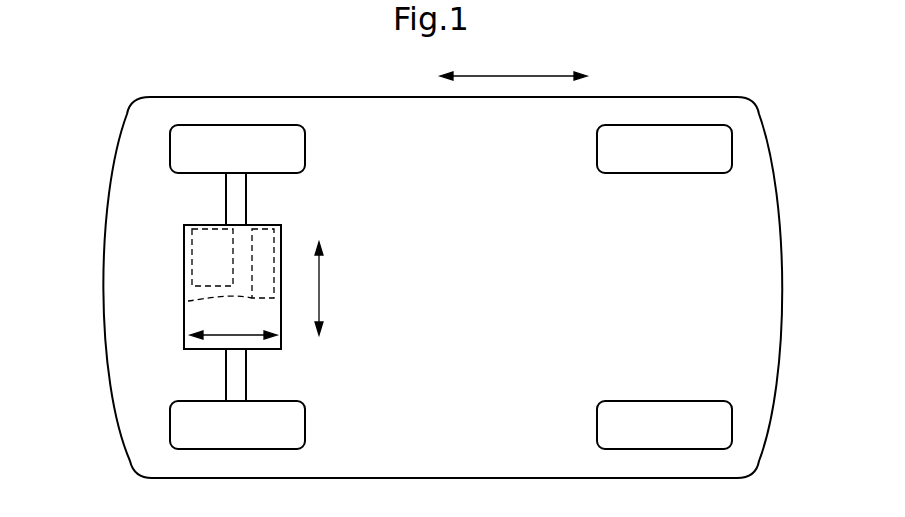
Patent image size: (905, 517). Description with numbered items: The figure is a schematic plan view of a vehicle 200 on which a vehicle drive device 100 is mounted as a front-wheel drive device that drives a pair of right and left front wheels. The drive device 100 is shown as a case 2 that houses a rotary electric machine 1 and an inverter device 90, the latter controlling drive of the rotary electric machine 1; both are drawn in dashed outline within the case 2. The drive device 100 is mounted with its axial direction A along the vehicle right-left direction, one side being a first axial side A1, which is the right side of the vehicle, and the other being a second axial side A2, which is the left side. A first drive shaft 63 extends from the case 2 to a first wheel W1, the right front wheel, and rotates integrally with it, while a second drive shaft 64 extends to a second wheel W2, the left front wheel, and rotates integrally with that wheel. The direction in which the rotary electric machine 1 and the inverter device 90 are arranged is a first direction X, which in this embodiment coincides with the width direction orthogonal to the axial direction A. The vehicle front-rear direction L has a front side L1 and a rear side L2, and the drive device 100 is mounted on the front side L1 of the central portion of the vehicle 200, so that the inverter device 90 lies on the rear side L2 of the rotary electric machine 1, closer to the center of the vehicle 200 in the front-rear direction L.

The vehicle 200 is at (717, 97).
The vehicle drive device 100 is at (182, 281).
The rotary electric machine 1 is at (192, 247).
The case 2 is at (199, 298).
The inverter device 90 is at (188, 301).
The first drive shaft 63 is at (243, 194).
The second drive shaft 64 is at (244, 383).
The first wheel W1 is at (298, 148).
The second wheel W2 is at (303, 428).
The first direction X is at (217, 337).
The axial direction A is at (332, 288).
The first axial side A1 is at (319, 228).
The second axial side A2 is at (319, 349).
The vehicle front-rear direction L is at (513, 62).
The front side L1 is at (422, 75).
The rear side L2 is at (605, 75).